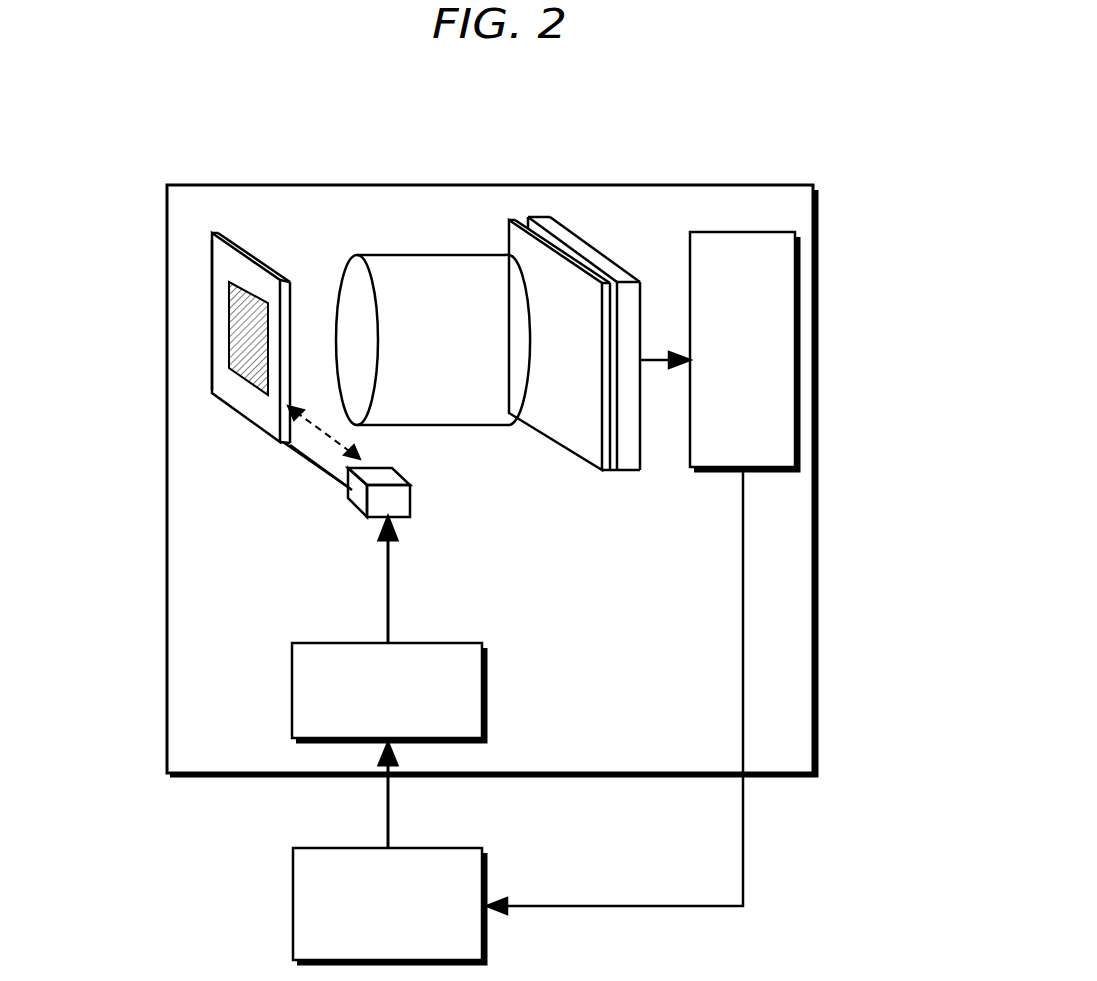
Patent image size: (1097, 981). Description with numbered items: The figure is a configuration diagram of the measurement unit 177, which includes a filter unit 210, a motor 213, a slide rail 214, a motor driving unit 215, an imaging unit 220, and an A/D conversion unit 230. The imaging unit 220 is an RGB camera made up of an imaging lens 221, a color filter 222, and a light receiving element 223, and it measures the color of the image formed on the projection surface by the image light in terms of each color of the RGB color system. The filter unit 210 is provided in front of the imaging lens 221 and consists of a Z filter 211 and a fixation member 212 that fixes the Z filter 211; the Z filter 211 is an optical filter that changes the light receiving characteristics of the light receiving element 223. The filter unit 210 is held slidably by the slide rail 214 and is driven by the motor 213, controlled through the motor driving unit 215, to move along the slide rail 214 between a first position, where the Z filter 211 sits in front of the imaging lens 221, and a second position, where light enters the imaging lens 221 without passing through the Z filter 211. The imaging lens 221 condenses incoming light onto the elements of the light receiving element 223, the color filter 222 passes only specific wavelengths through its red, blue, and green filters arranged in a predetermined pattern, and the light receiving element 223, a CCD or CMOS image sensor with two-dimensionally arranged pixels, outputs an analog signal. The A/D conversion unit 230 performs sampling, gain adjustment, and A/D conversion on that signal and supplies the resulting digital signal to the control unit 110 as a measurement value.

The control unit 110 is at (450, 849).
The measurement unit 177 is at (820, 210).
The filter unit 210 is at (218, 232).
The Z filter 211 is at (237, 357).
The fixation member 212 is at (212, 267).
The motor 213 is at (413, 493).
The slide rail 214 is at (298, 458).
The motor driving unit 215 is at (487, 668).
The imaging unit 220 is at (628, 125).
The imaging lens 221 is at (388, 255).
The color filter 222 is at (518, 217).
The light receiving element 223 is at (552, 223).
The A/D conversion unit 230 is at (727, 232).